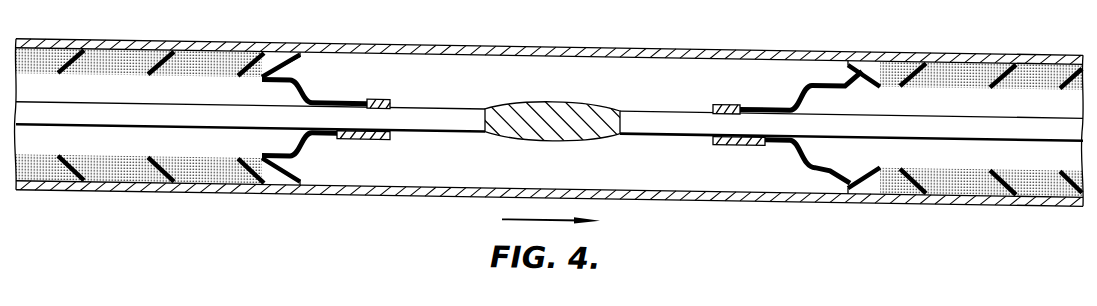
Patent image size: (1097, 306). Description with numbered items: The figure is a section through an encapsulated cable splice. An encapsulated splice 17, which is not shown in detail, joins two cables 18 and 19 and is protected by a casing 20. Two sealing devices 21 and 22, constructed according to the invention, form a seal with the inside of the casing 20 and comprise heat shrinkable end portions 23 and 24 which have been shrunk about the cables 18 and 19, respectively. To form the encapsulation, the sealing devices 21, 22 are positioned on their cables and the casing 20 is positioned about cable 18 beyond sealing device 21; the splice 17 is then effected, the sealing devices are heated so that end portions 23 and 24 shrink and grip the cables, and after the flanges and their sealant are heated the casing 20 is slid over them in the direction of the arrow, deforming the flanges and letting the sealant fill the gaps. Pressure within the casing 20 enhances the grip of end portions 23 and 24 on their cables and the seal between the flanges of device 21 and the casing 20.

The encapsulated splice 17 is at (553, 101).
The cable 18 is at (133, 113).
The cable 19 is at (937, 116).
The casing 20 is at (533, 40).
The sealing device 21 is at (308, 85).
The sealing device 22 is at (795, 85).
The heat shrinkable end portion 23 is at (367, 92).
The heat shrinkable end portion 24 is at (742, 136).